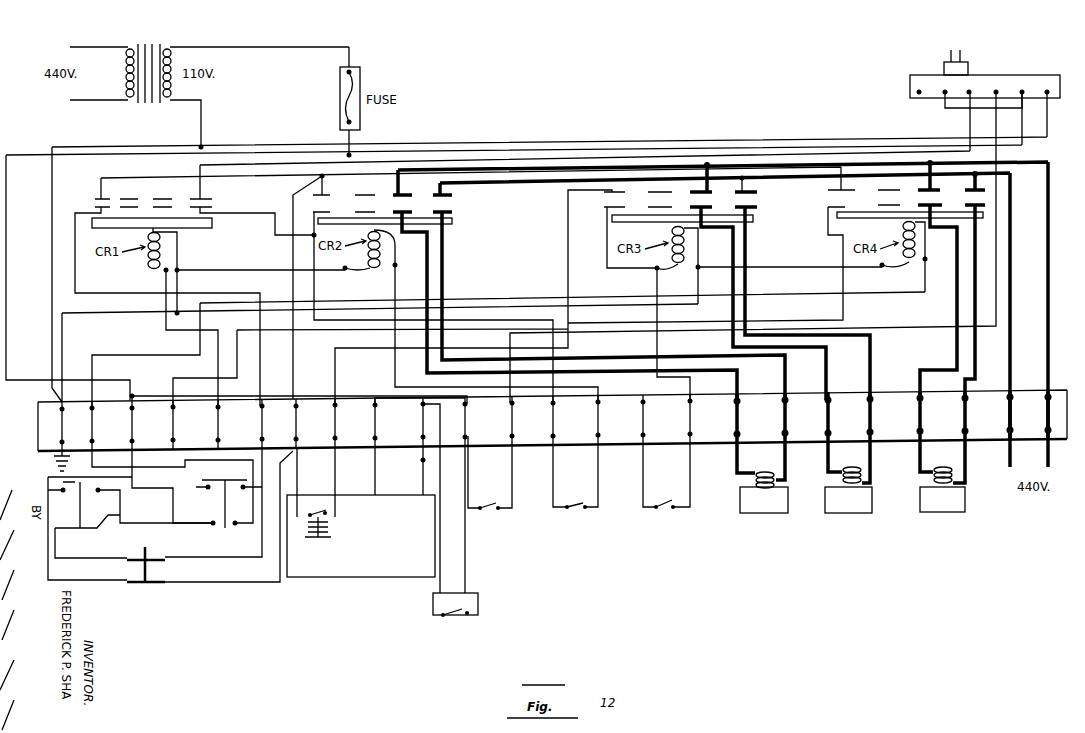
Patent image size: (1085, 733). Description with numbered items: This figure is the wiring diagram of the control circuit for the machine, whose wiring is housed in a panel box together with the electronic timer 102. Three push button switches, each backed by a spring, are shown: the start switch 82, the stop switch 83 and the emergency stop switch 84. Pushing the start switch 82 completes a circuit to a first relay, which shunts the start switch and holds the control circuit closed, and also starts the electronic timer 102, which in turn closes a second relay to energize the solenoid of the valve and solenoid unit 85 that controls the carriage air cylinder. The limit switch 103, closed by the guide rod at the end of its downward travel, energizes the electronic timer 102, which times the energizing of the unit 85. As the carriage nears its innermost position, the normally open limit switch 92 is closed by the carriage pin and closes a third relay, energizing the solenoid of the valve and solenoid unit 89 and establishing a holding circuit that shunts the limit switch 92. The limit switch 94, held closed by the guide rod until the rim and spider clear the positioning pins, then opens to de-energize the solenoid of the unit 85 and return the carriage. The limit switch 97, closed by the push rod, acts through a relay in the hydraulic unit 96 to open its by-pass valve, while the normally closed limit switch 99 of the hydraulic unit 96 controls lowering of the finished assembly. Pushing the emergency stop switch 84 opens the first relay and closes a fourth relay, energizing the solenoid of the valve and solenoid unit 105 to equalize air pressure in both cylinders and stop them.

The electronic timer 102 is at (910, 90).
The limit switch 99 is at (313, 503).
The hydraulic unit 96 is at (370, 511).
The limit switch 97 is at (468, 616).
The limit switch 103 is at (490, 512).
The limit switch 94 is at (583, 510).
The limit switch 92 is at (670, 510).
The valve and solenoid unit 85 is at (775, 512).
The valve and solenoid unit 89 is at (858, 512).
The valve and solenoid unit 105 is at (950, 510).
The emergency stop switch 84 is at (130, 520).
The start switch 82 is at (232, 504).
The stop switch 83 is at (157, 565).